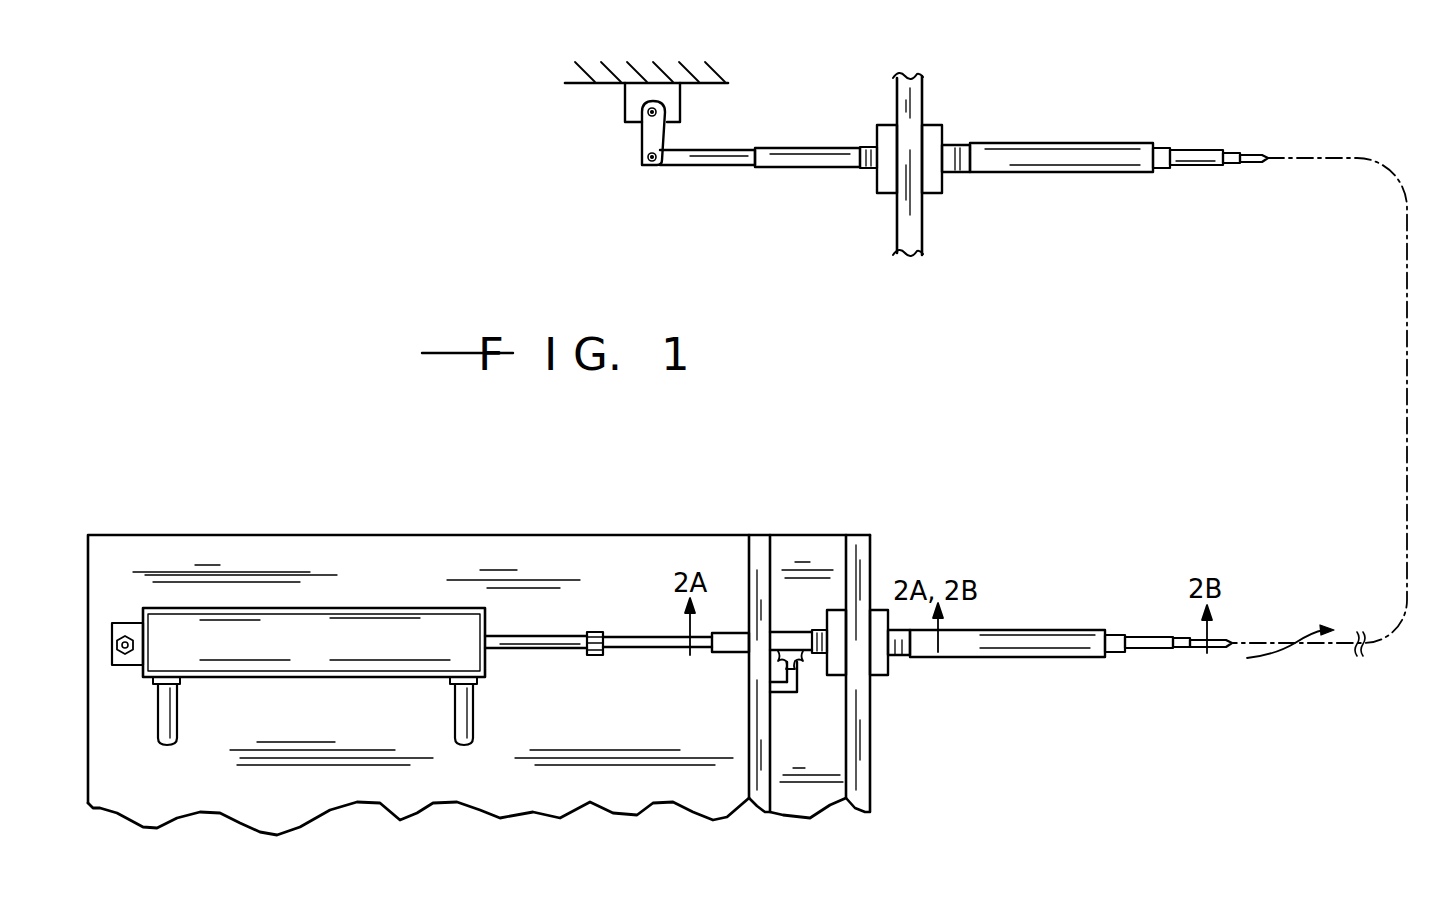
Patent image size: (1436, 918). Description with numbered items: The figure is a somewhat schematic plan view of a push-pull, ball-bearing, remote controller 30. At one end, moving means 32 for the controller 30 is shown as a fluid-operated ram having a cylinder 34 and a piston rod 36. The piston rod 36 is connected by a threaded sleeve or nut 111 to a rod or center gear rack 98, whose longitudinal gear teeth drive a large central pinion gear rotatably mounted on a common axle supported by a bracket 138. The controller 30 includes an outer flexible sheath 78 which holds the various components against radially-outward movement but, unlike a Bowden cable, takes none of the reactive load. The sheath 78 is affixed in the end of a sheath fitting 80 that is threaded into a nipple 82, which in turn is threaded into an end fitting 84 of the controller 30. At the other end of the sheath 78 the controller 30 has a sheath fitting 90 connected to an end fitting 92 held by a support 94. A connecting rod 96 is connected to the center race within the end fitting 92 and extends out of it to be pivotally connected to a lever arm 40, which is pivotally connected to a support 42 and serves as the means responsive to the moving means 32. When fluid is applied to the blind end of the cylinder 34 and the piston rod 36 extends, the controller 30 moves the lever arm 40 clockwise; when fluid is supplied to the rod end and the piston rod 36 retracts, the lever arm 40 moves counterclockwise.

The push-pull, ball-bearing, remote controller 30 is at (1064, 406).
The moving means 32 is at (405, 602).
The cylinder 34 is at (318, 653).
The piston rod 36 is at (530, 652).
The lever arm 40 is at (642, 131).
The support 42 is at (680, 97).
The outer flexible sheath 78 is at (1255, 152).
The sheath fitting 80 is at (1142, 633).
The nipple 82 is at (1110, 632).
The end fitting 84 is at (1047, 630).
The sheath fitting 90 is at (1192, 150).
The end fitting 92 is at (1070, 143).
The support 94 is at (923, 102).
The connecting rod 96 is at (695, 167).
The gear rack 98 is at (640, 652).
The threaded sleeve or nut 111 is at (595, 632).
The bracket 138 is at (798, 690).